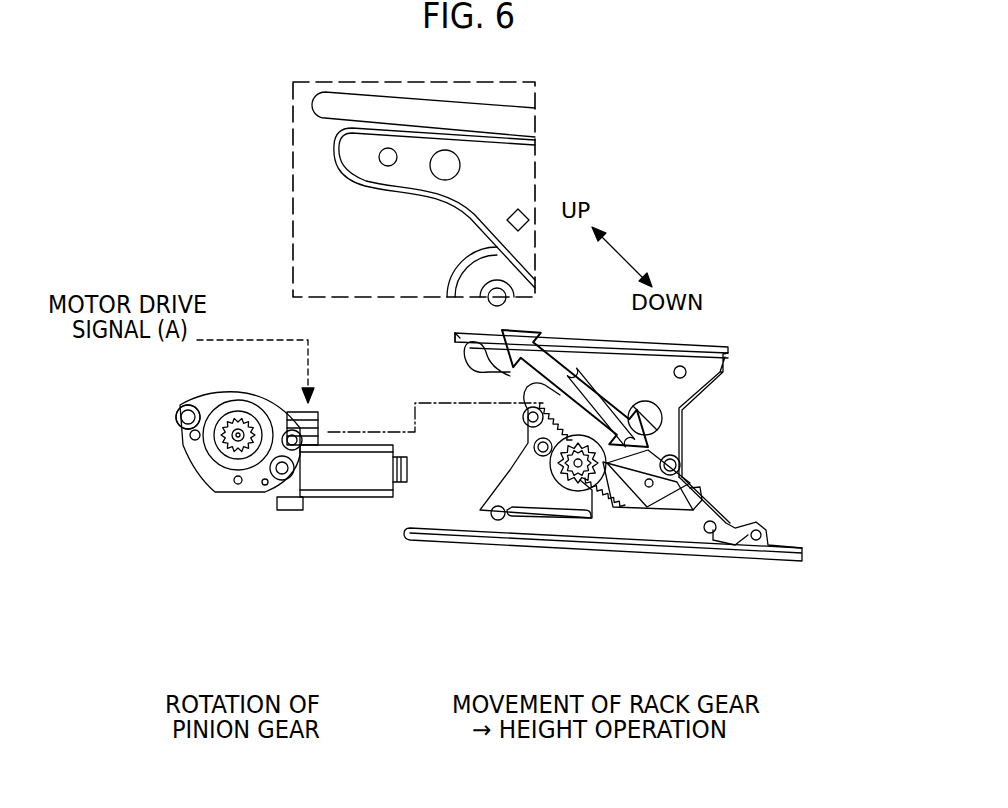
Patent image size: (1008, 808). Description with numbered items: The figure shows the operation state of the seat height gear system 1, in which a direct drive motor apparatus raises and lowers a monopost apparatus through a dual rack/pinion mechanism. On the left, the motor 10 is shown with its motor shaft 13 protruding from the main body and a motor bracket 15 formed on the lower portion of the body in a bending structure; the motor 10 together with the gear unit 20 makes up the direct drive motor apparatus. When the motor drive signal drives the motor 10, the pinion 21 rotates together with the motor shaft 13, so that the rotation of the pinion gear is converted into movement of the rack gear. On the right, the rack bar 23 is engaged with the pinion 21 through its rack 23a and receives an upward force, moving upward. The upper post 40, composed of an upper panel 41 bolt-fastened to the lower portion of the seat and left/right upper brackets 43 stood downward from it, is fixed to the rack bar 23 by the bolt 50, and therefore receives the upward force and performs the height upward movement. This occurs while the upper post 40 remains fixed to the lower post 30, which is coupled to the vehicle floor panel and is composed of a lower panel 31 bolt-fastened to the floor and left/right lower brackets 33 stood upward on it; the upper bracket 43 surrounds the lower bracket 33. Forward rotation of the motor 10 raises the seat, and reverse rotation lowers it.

The seat height gear system 1 is at (368, 368).
The motor 10 is at (190, 448).
The motor shaft 13 is at (173, 412).
The motor bracket 15 is at (527, 513).
The gear unit 20 is at (682, 465).
The pinion 21 is at (233, 457).
The rack bar 23 is at (495, 368).
The rack 23a is at (617, 513).
The lower post 30 is at (603, 578).
The lower panel 31 is at (773, 548).
The lower bracket 33 is at (713, 532).
The upper post 40 is at (355, 152).
The upper panel 41 is at (720, 347).
The upper bracket 43 is at (708, 377).
The bolt 50 is at (515, 500).